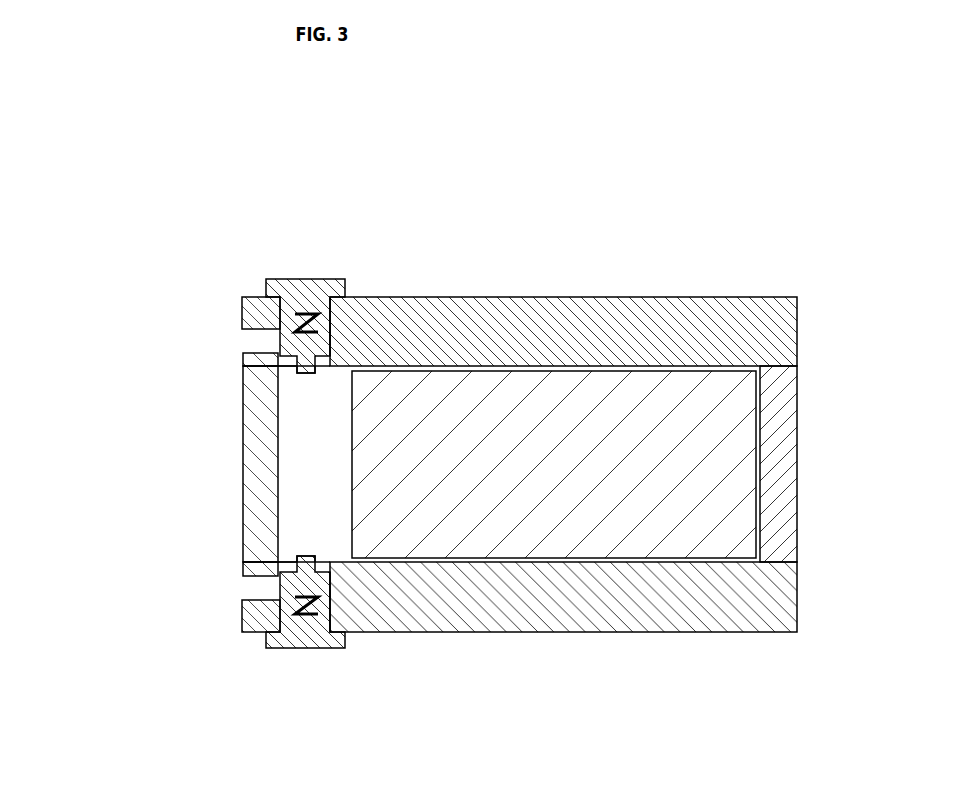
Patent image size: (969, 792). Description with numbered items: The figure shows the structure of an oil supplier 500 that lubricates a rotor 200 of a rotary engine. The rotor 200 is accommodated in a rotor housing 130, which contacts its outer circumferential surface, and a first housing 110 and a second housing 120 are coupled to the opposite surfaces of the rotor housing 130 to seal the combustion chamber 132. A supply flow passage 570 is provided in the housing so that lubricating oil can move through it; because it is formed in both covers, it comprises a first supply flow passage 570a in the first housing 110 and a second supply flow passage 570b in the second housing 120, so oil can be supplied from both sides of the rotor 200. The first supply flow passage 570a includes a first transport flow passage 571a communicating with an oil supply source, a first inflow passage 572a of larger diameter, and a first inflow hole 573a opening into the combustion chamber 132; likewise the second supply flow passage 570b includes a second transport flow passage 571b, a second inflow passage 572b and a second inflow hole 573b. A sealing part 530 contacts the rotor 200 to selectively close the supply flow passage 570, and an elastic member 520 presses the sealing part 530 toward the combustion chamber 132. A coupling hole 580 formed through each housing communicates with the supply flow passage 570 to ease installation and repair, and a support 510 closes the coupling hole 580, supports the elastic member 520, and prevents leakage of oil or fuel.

The first housing 110 is at (778, 334).
The second housing 120 is at (783, 612).
The rotor housing 130 is at (780, 433).
The combustion chamber 132 is at (330, 417).
The rotor 200 is at (745, 506).
The oil supplier 500 is at (378, 200).
The support 510 is at (288, 286).
The elastic member 520 is at (297, 318).
The sealing part 530 is at (330, 340).
The supply flow passage 570 is at (92, 553).
The first supply flow passage 570a is at (150, 336).
The second supply flow passage 570b is at (155, 521).
The first transport flow passage 571a is at (243, 353).
The first inflow passage 572a is at (290, 357).
The first inflow hole 573a is at (296, 367).
The second transport flow passage 571b is at (243, 576).
The second inflow passage 572b is at (290, 573).
The second inflow hole 573b is at (296, 562).
The coupling hole 580 is at (242, 303).